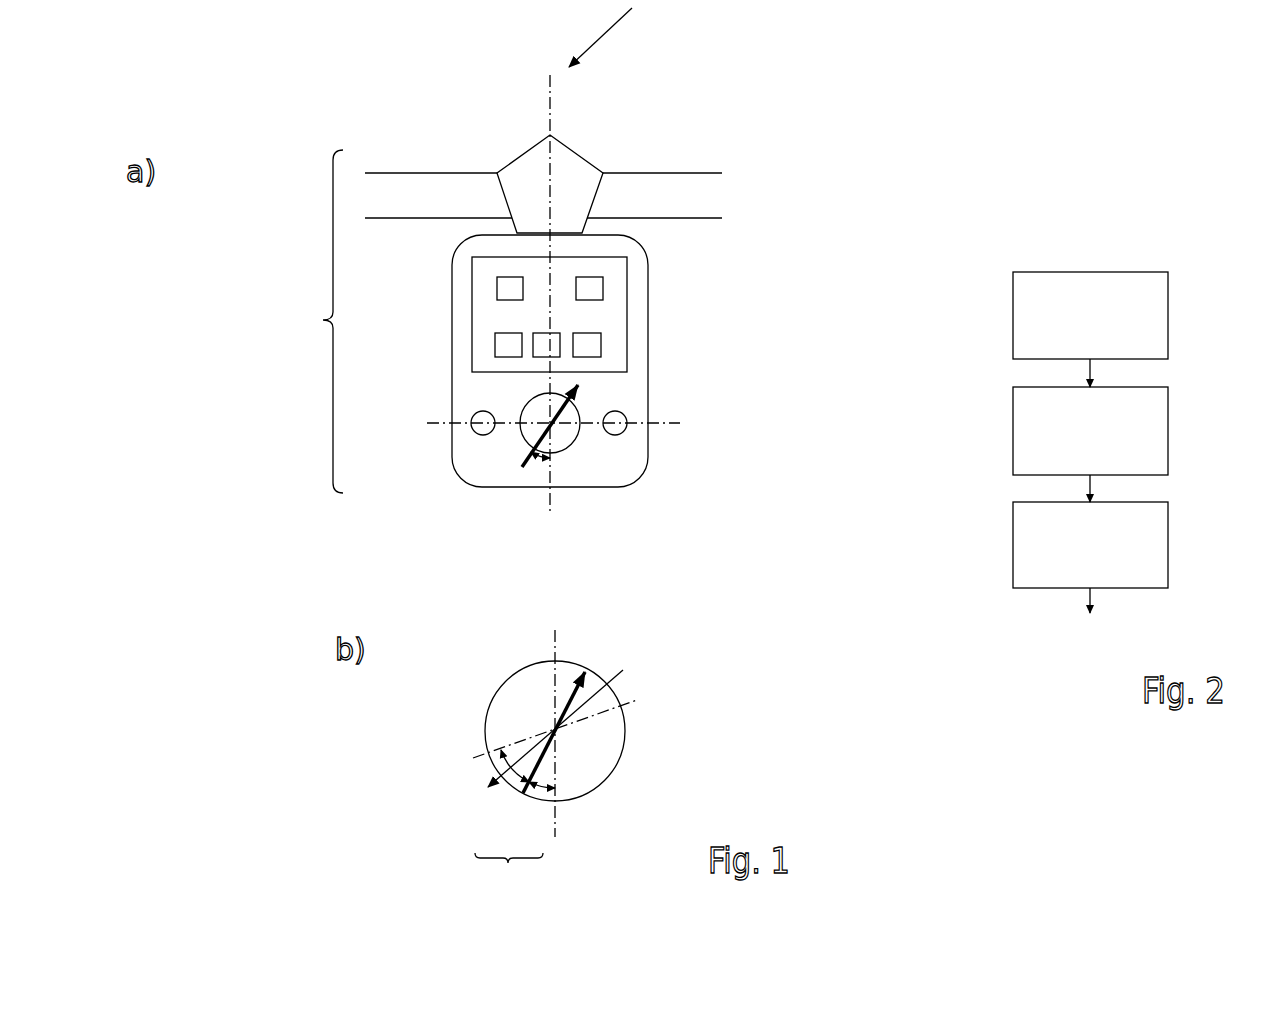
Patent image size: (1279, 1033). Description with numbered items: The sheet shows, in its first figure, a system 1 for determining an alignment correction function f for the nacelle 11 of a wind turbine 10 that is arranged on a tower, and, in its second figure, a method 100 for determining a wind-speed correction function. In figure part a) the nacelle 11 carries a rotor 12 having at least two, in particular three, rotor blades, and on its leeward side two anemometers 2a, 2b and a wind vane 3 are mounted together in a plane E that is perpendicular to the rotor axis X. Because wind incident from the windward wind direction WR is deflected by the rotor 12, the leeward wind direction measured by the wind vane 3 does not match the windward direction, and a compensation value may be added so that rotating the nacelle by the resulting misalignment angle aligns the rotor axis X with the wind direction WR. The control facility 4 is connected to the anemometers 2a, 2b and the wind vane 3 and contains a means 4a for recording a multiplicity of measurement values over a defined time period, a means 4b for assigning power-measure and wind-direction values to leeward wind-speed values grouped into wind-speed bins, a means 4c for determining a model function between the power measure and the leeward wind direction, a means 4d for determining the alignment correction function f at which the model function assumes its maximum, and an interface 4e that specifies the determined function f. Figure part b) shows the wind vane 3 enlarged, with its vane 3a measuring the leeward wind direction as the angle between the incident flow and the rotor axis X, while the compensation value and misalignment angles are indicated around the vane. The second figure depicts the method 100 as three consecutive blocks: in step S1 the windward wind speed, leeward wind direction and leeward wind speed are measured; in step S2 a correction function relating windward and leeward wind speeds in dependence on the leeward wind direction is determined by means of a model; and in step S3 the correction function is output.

In FIG. 1, the system 1 is at (310, 123).
In FIG. 1, the wind turbine 10 is at (313, 321).
In FIG. 1, the nacelle 11 is at (648, 403).
In FIG. 1, the rotor 12 is at (570, 147).
In FIG. 1, the first anemometer 2a is at (483, 435).
In FIG. 1, the second anemometer 2b is at (615, 435).
In FIG. 1, the wind vane 3 is at (573, 443).
In FIG. 1, the wind vane 3a is at (582, 674).
In FIG. 1, the control facility 4 is at (627, 315).
In FIG. 1, the means for recording 4a is at (497, 288).
In FIG. 1, the means for assigning 4b is at (603, 289).
In FIG. 1, the means for determining a model function 4c is at (495, 345).
In FIG. 1, the means for determining an alignment correction function 4d is at (601, 347).
In FIG. 1, the interface 4e is at (548, 357).
In FIG. 2, the method 100 is at (980, 252).
In FIG. 2, the method step S1 is at (1090, 315).
In FIG. 2, the method step S2 is at (1090, 431).
In FIG. 2, the method step S3 is at (1090, 545).
In FIG. 1, the wind direction WR is at (600, 37).
In FIG. 1, the rotor axis X is at (550, 98).
In FIG. 1, the plane E is at (437, 415).
In FIG. 1, the alignment correction function f is at (497, 772).